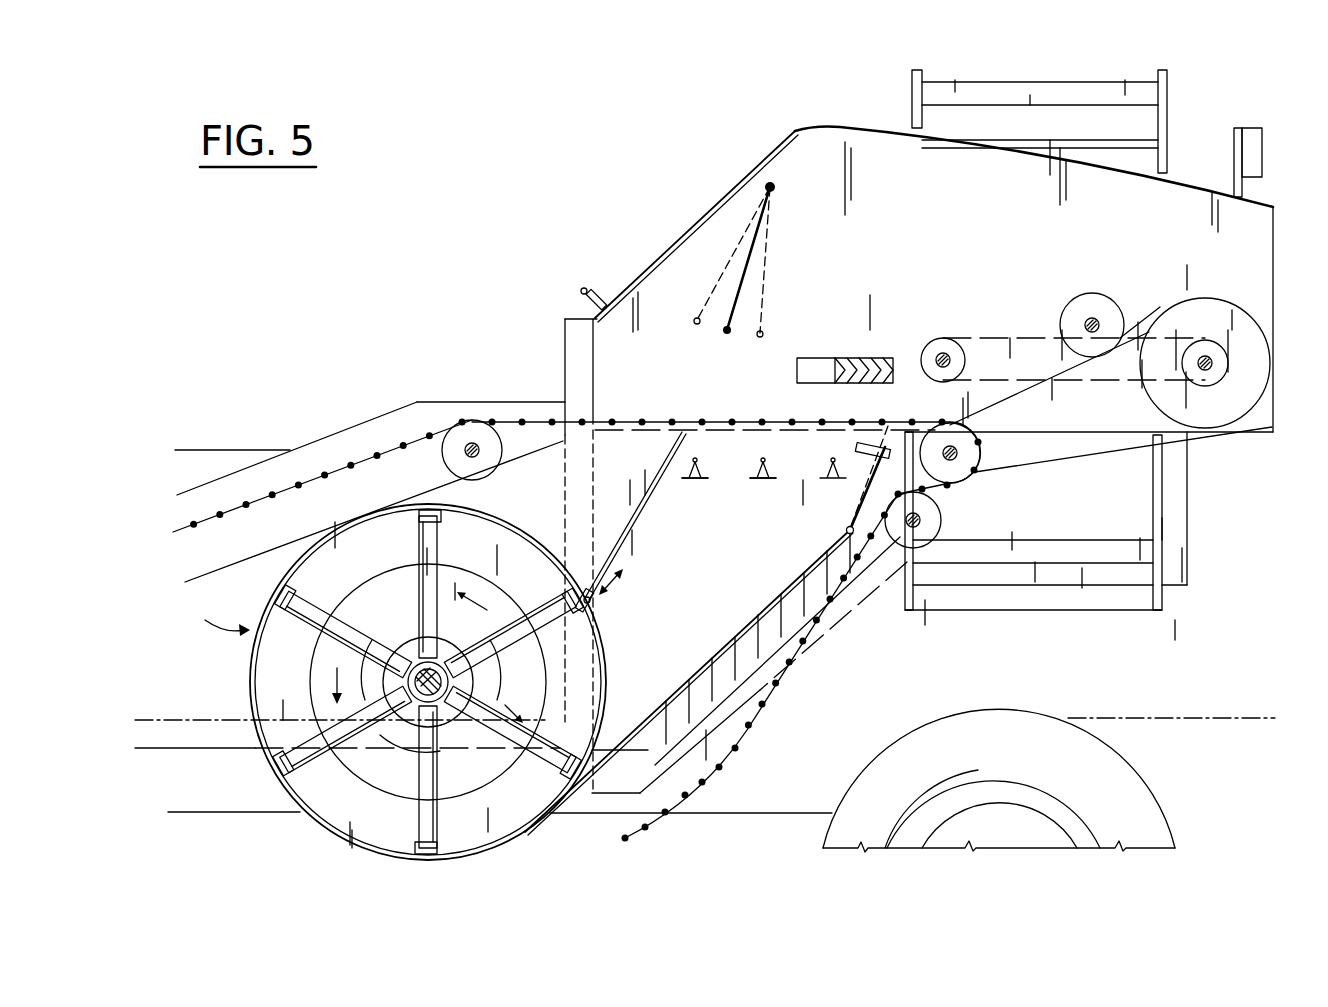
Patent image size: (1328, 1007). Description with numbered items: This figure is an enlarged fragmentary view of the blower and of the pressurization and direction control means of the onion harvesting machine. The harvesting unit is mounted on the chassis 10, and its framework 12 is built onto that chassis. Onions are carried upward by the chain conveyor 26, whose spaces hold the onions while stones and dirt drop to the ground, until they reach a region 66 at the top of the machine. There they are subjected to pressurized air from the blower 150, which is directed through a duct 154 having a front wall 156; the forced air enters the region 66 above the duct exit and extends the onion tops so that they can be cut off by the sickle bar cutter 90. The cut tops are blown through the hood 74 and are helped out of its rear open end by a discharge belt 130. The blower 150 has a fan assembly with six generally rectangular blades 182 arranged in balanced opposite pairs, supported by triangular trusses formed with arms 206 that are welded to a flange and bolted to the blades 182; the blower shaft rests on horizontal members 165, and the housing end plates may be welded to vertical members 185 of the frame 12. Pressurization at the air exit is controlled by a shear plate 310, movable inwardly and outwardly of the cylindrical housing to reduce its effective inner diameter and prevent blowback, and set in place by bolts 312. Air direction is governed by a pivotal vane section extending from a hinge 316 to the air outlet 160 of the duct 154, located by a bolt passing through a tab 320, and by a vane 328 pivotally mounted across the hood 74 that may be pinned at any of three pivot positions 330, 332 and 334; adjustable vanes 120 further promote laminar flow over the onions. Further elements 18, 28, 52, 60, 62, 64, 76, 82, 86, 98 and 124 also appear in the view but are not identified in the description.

The chassis 10 is at (212, 812).
The framework 12 is at (182, 720).
The wheel 18 is at (1148, 794).
The chain conveyor 26 is at (330, 470).
The feed chute 28 is at (230, 465).
The lower roller 52 is at (942, 520).
The drive drum 60 is at (1266, 369).
The idler roller 62 is at (1118, 305).
The chain sprocket 64 is at (480, 425).
The region 66 is at (857, 309).
The hood 74 is at (840, 128).
The sloped front wall 76 is at (630, 275).
The lower frame 82 is at (1108, 540).
The upper frame 86 is at (1090, 82).
The sickle bar cutter 90 is at (870, 358).
The bracket 98 is at (1250, 128).
The adjustable vanes 120 is at (764, 470).
The tine bar 124 is at (752, 490).
The discharge belt 130 is at (1020, 338).
The blower 150 is at (235, 620).
The duct 154 is at (695, 580).
The front wall 156 is at (660, 462).
The air outlet 160 is at (768, 420).
The horizontal member 165 is at (460, 745).
The blades 182 is at (418, 548).
The vertical member 185 is at (568, 492).
The arms 206 is at (355, 640).
The shear plate 310 is at (615, 565).
The bolts 312 is at (596, 566).
The hinge 316 is at (847, 528).
The tab 320 is at (876, 444).
The vane 328 is at (756, 252).
The pivot position 330 is at (695, 325).
The pivot position 332 is at (726, 336).
The pivot position 334 is at (763, 338).